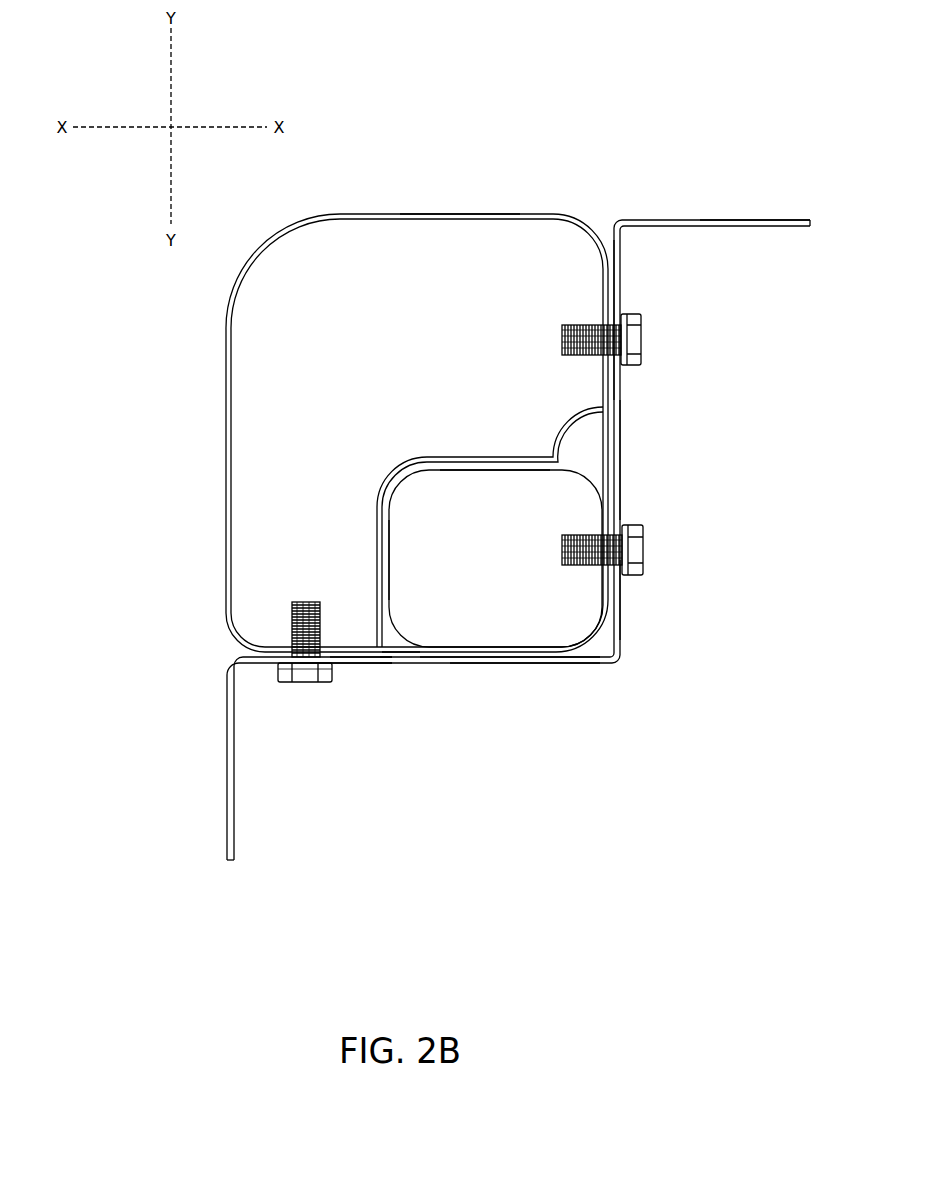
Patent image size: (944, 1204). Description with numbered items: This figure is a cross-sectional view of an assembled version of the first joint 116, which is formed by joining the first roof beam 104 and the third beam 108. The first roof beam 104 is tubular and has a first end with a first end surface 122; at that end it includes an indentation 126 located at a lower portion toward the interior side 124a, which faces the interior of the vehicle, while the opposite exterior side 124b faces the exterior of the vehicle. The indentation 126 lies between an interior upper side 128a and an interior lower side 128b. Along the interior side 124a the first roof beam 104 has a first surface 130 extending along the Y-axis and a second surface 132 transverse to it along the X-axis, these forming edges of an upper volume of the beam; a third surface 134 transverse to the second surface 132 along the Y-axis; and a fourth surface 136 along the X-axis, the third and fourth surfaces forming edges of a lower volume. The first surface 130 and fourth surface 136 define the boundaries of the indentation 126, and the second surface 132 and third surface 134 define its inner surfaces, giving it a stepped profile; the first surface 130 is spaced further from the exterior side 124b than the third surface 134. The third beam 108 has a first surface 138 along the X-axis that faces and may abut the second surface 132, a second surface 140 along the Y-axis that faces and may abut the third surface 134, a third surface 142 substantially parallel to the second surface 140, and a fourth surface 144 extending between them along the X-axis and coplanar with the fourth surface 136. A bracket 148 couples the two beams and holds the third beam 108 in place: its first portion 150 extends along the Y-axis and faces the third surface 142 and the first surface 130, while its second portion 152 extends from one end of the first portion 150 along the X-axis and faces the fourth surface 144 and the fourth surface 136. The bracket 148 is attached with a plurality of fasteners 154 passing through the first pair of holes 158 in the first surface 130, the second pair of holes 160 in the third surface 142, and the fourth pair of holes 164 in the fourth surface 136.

The first joint 116 is at (557, 80).
The first roof beam 104 is at (388, 357).
The third beam 108 is at (483, 557).
The first end surface 122 is at (480, 212).
The interior side 124a is at (655, 187).
The exterior side 124b is at (203, 410).
The indentation 126 is at (401, 651).
The interior upper side 128a is at (596, 243).
The interior lower side 128b is at (378, 660).
The first surface 130 is at (612, 298).
The second surface 132 is at (484, 471).
The third surface 134 is at (389, 582).
The fourth surface 136 is at (357, 664).
The first surface 138 is at (470, 455).
The second surface 140 is at (377, 555).
The third surface 142 is at (621, 586).
The fourth surface 144 is at (500, 663).
The bracket 148 is at (786, 221).
The first portion 150 is at (619, 452).
The second portion 152 is at (540, 662).
The fasteners 154 is at (641, 340).
The first pair of holes 158 is at (578, 325).
The second pair of holes 160 is at (578, 536).
The fourth pair of holes 164 is at (291, 648).